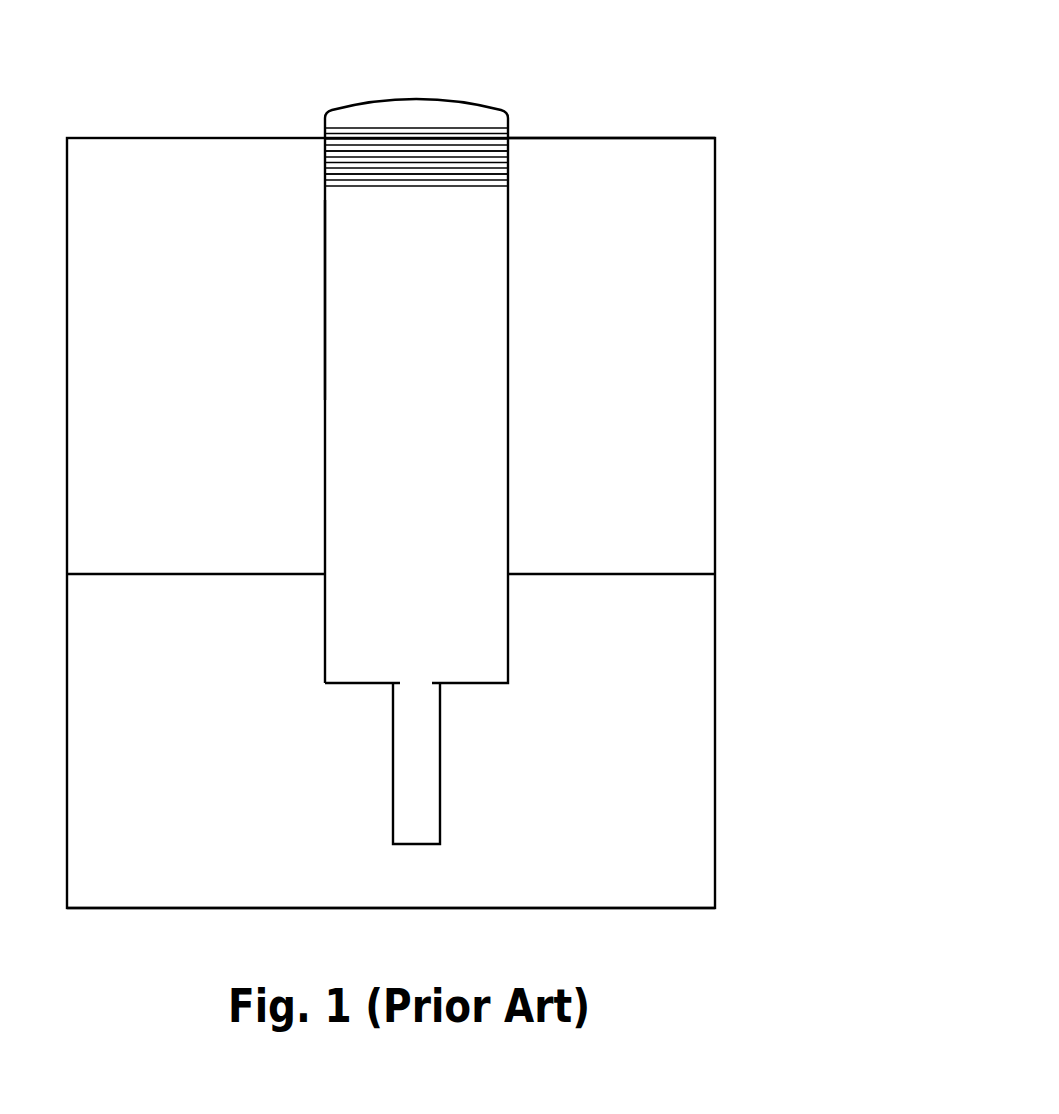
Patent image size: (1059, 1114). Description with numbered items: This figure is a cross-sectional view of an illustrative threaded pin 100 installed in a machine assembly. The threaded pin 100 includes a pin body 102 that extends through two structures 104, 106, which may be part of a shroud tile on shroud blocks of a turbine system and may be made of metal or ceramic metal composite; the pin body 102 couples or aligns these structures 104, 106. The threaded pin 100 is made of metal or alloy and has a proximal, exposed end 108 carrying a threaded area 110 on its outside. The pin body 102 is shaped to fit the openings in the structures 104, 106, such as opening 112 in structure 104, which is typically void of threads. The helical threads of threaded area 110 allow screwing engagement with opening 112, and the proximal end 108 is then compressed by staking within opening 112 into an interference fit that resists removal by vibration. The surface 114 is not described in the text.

The threaded pin 100 is at (330, 88).
The pin body 102 is at (598, 138).
The structure 104 is at (216, 355).
The structure 106 is at (213, 702).
The proximal end 108 is at (294, 94).
The threaded area 110 is at (517, 140).
The opening 112 is at (323, 292).
The top surface 114 is at (653, 138).